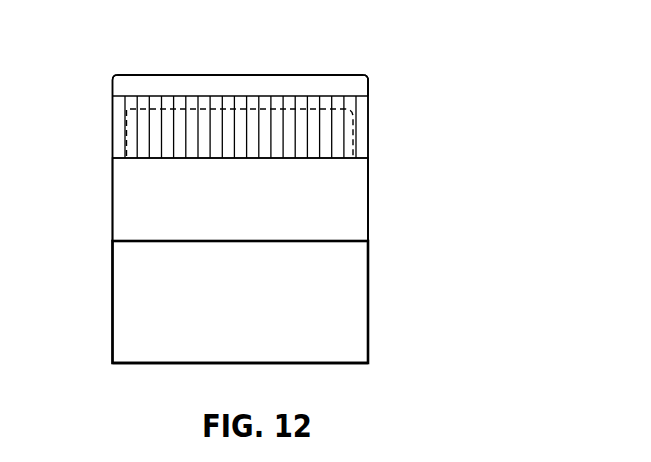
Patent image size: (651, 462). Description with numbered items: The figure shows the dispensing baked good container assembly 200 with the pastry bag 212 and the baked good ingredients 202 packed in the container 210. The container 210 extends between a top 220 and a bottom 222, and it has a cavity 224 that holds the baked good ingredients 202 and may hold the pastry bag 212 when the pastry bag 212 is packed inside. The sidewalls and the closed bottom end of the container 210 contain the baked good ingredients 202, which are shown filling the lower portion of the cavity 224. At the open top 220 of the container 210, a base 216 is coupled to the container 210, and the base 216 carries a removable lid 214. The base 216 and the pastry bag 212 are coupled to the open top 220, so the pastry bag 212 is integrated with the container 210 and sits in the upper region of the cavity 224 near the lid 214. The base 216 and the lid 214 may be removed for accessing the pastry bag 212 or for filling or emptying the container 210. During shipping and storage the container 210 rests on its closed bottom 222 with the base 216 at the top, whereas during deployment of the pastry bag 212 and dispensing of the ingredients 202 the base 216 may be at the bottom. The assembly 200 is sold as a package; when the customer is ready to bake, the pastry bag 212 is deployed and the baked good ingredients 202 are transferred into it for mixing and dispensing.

The container assembly 200 is at (491, 59).
The container 210 is at (112, 197).
The top 220 is at (351, 74).
The removable lid 214 is at (368, 89).
The base 216 is at (368, 123).
The pastry bag 212 is at (145, 123).
The cavity 224 is at (355, 200).
The baked good ingredients 202 is at (355, 276).
The bottom 222 is at (348, 363).